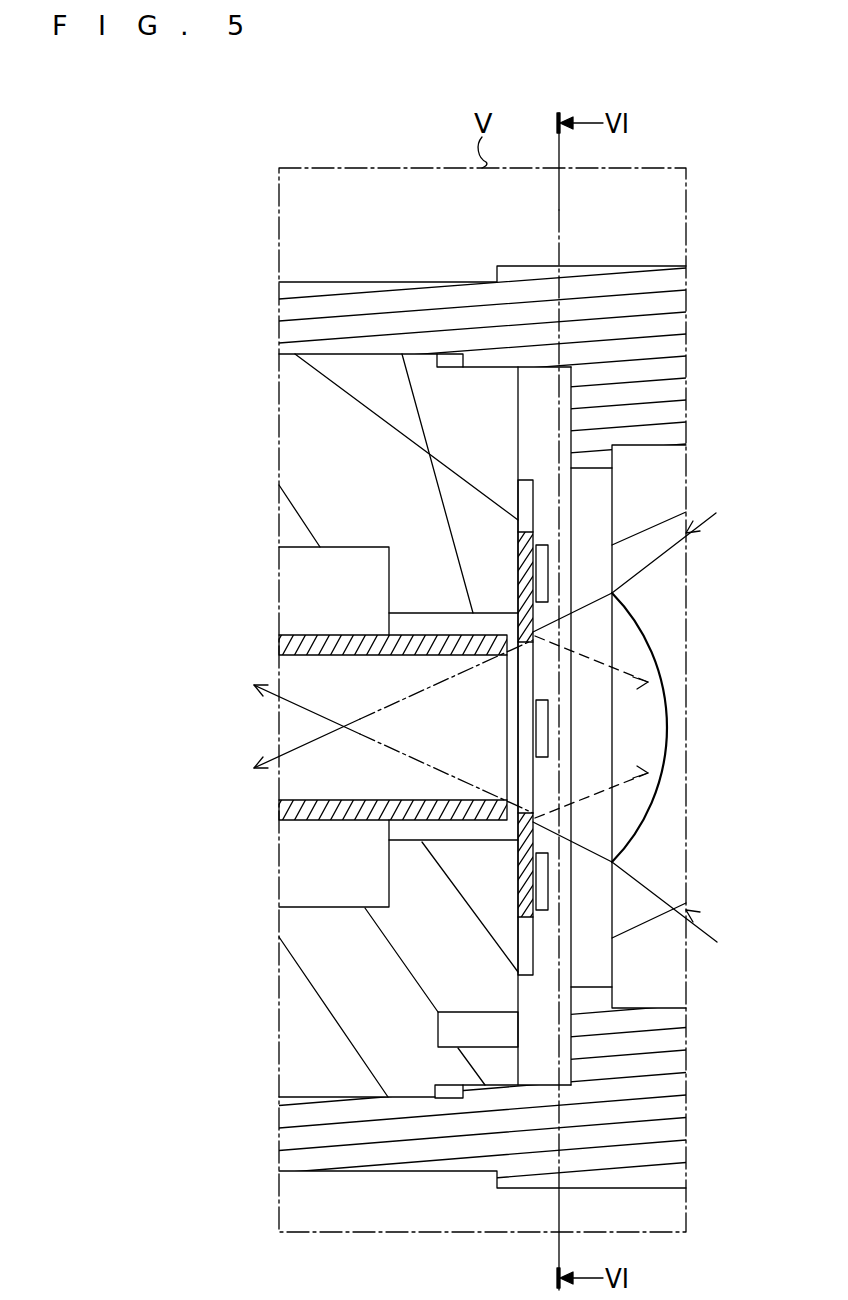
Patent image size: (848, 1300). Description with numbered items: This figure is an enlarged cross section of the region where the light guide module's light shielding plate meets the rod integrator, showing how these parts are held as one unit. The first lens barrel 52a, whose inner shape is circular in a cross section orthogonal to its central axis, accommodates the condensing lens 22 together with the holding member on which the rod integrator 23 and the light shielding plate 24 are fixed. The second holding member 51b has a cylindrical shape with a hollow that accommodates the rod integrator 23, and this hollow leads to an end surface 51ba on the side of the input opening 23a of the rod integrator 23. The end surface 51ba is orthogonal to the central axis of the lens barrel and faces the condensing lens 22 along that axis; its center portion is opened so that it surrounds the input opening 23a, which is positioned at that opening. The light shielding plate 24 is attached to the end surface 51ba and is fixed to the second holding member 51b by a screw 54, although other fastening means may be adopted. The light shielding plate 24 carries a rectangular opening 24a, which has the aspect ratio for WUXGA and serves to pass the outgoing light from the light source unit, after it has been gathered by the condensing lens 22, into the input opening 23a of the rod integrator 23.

The condensing lens 22 is at (674, 578).
The rod integrator 23 is at (290, 648).
The input opening 23a is at (517, 650).
The light shielding plate 24 is at (527, 965).
The opening 24a is at (667, 700).
The second holding member 51b is at (300, 465).
The end surface 51ba is at (518, 448).
The first lens barrel 52a is at (300, 328).
The screw 54 is at (548, 556).